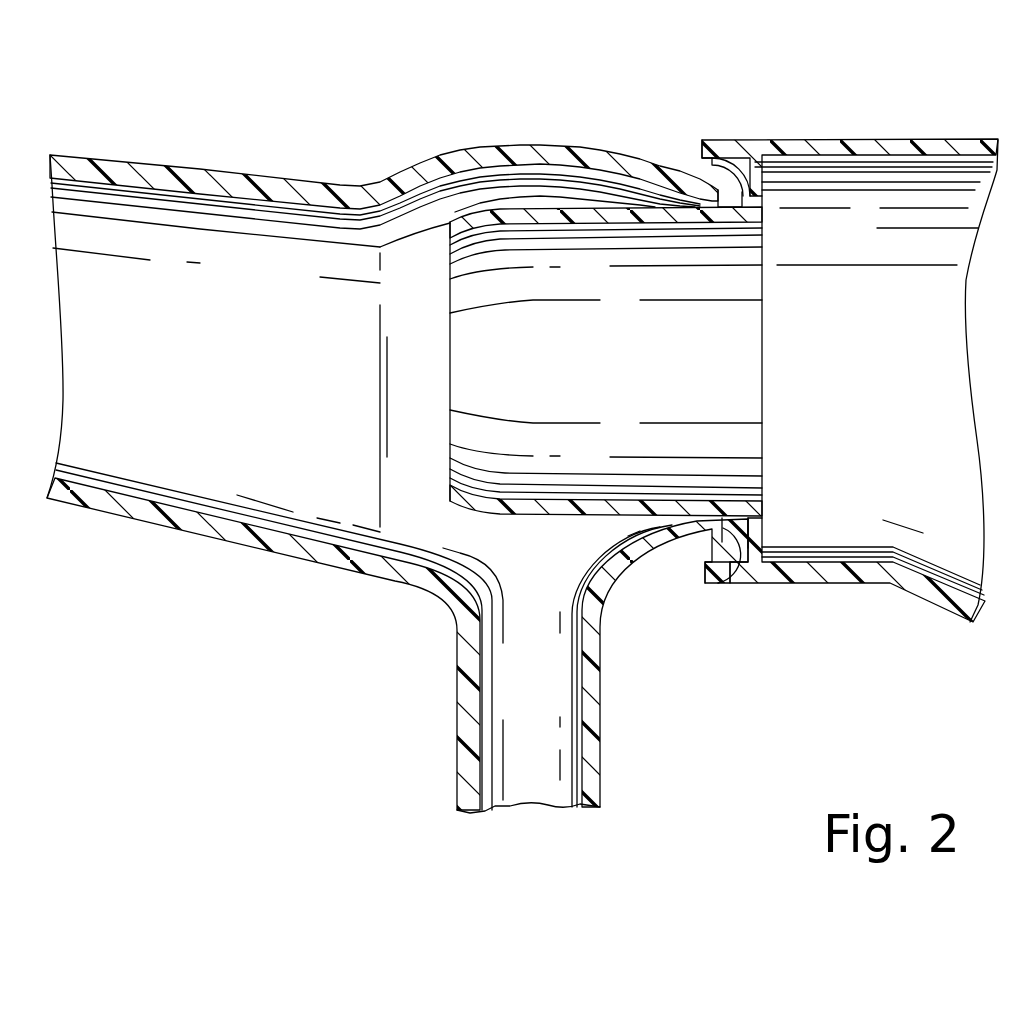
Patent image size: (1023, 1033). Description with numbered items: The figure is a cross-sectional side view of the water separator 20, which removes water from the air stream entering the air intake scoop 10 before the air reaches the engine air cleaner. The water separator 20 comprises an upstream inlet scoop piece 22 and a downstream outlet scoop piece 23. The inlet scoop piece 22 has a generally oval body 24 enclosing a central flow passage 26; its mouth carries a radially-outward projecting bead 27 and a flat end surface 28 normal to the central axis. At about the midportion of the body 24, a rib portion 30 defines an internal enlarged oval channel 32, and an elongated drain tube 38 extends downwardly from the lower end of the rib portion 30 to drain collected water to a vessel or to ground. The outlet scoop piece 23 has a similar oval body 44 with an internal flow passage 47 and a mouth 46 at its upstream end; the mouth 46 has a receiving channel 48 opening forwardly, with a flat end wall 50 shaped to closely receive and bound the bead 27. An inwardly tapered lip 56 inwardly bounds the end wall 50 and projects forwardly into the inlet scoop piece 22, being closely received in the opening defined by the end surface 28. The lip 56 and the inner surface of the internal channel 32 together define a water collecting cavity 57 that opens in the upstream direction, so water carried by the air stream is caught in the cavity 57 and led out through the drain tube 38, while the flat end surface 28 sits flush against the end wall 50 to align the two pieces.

The air intake scoop 10 is at (108, 587).
The water separator 20 is at (232, 702).
The inlet scoop piece 22 is at (435, 149).
The outlet scoop piece 23 is at (872, 140).
The body of inlet scoop piece 24 is at (187, 168).
The central flow passage 26 is at (137, 359).
The bead 27 is at (710, 141).
The flat end surface 28 is at (745, 200).
The rib portion 30 is at (535, 134).
The internal channel 32 is at (576, 170).
The drain tube 38 is at (457, 683).
The body of outlet scoop piece 44 is at (961, 140).
The mouth of outlet scoop piece 46 is at (697, 583).
The internal flow passage 47 is at (865, 369).
The receiving channel 48 is at (680, 555).
The end wall 50 is at (745, 584).
The lip 56 is at (497, 210).
The water collecting cavity 57 is at (382, 185).